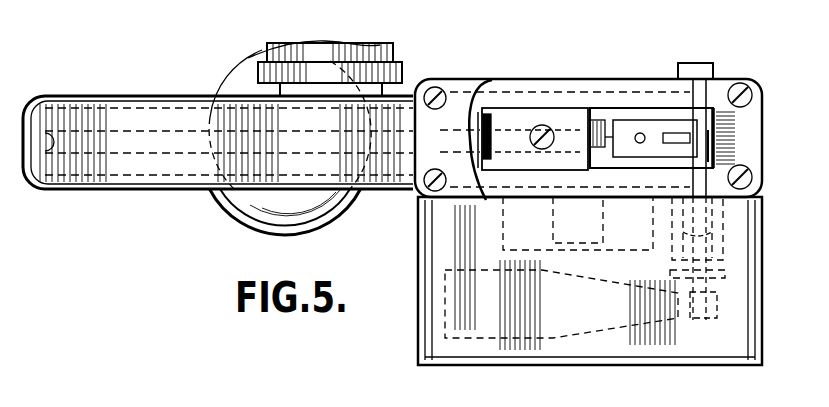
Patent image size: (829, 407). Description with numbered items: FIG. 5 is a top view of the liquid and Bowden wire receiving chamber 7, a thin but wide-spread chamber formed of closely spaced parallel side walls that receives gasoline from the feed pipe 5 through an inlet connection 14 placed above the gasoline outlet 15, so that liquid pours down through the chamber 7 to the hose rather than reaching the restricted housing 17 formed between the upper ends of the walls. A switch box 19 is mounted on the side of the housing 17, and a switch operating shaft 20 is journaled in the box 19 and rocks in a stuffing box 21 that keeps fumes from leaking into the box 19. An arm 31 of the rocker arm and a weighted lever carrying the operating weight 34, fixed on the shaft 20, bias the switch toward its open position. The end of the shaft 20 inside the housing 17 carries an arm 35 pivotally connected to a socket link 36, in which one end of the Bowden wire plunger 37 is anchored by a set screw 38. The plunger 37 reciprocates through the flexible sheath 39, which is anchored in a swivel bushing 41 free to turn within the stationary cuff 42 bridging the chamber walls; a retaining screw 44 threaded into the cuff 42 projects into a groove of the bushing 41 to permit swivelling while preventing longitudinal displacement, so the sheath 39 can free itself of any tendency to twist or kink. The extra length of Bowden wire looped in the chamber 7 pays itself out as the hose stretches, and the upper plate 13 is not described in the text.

The feed pipe 5 is at (390, 52).
The chamber 7 is at (47, 190).
The top plate 13 is at (550, 100).
The inlet connection 14 is at (345, 75).
The gasoline outlet 15 is at (240, 208).
The housing 17 is at (625, 110).
The switch box 19 is at (418, 250).
The switch operating shaft 20 is at (707, 112).
The stuffing box 21 is at (725, 237).
The arm 31 is at (312, 29).
The operating weight 34 is at (562, 333).
The arm 35 is at (712, 157).
The socket link 36 is at (667, 130).
The Bowden wire plunger 37 is at (603, 128).
The set screw 38 is at (647, 130).
The Bowden wire sheath 39 is at (110, 112).
The swivel bushing 41 is at (513, 137).
The cuff 42 is at (507, 110).
The retaining screw 44 is at (543, 146).